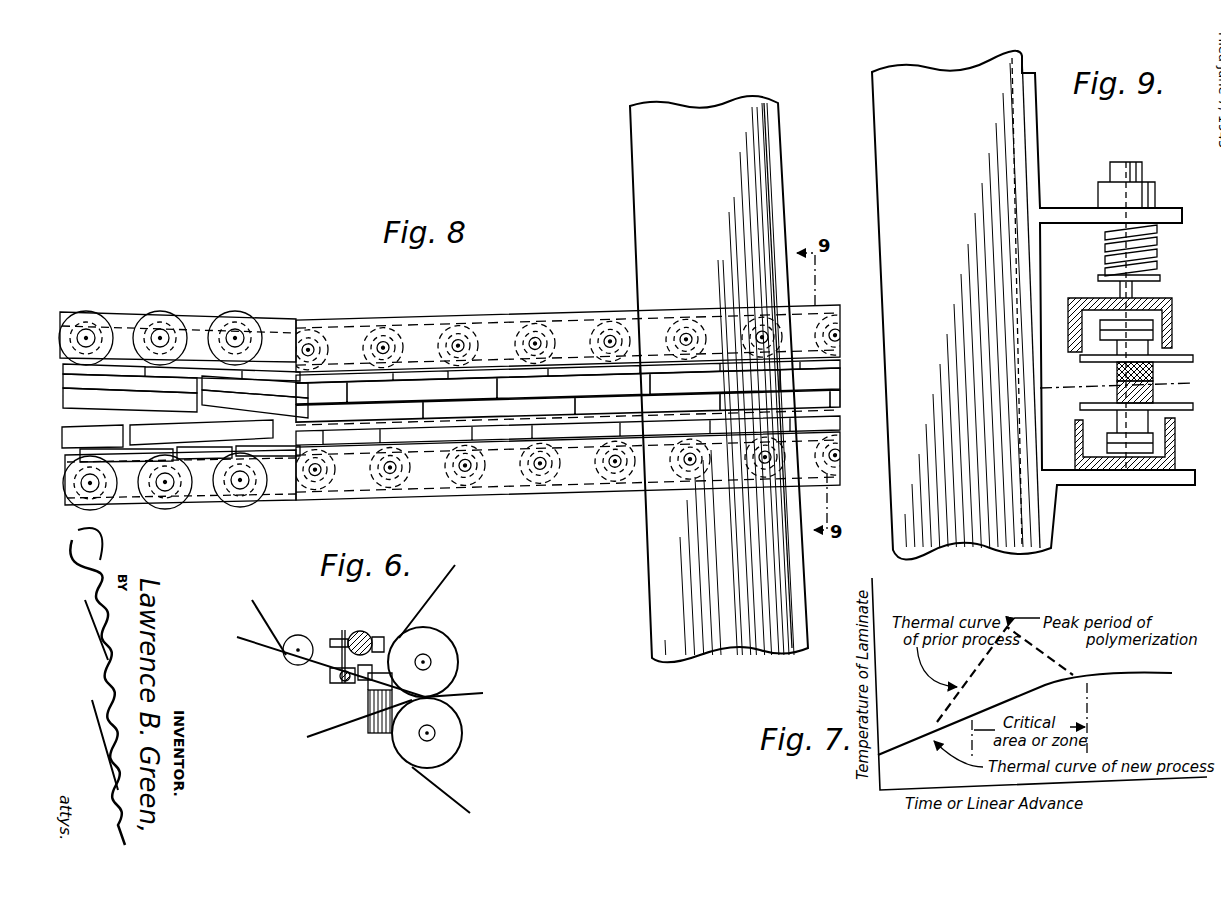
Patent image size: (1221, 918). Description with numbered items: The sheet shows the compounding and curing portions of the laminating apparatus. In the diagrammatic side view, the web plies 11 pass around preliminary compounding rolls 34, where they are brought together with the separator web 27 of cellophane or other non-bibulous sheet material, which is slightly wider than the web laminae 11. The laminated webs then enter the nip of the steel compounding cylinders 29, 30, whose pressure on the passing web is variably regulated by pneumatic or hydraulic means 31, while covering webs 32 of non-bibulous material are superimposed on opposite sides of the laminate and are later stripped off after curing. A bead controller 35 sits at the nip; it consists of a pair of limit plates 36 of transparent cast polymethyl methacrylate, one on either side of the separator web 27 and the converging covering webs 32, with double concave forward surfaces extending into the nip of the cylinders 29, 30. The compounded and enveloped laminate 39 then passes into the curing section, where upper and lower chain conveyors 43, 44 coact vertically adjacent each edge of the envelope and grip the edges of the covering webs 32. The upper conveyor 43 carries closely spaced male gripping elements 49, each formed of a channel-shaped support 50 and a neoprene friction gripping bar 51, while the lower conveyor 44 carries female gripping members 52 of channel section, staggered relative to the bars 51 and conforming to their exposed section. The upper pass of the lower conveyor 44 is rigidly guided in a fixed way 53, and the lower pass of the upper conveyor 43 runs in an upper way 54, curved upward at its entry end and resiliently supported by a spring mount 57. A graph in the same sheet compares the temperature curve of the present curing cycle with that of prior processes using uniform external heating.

In FIG. 6, the webs 11 is at (261, 609).
In FIG. 6, the separator web 27 is at (254, 655).
In FIG. 6, the compounding cylinder 29 is at (458, 656).
In FIG. 6, the compounding cylinder 30 is at (455, 721).
In FIG. 6, the pneumatic or hydraulic means 31 is at (336, 628).
In FIG. 6, the covering webs 32 is at (447, 585).
In FIG. 6, the preliminary compounding rolls 34 is at (296, 662).
In FIG. 6, the bead controller 35 is at (357, 732).
In FIG. 6, the limit plates 36 is at (383, 735).
In FIG. 9, the enveloped laminate 39 is at (1095, 386).
In FIG. 8, the upper chain conveyor 43 is at (137, 320).
In FIG. 8, the lower chain conveyor 44 is at (128, 500).
In FIG. 8, the male gripping elements 49 is at (160, 390).
In FIG. 8, the channel-shaped support 50 is at (98, 372).
In FIG. 8, the friction gripping bar 51 is at (85, 398).
In FIG. 9, the friction gripping bar 51 is at (1153, 372).
In FIG. 8, the female gripping members 52 is at (207, 437).
In FIG. 9, the female gripping members 52 is at (1153, 390).
In FIG. 8, the fixed channel or way 53 is at (588, 488).
In FIG. 9, the fixed channel or way 53 is at (1182, 472).
In FIG. 8, the upper way 54 is at (543, 320).
In FIG. 9, the upper way 54 is at (1163, 310).
In FIG. 9, the spring mount 57 is at (1105, 251).